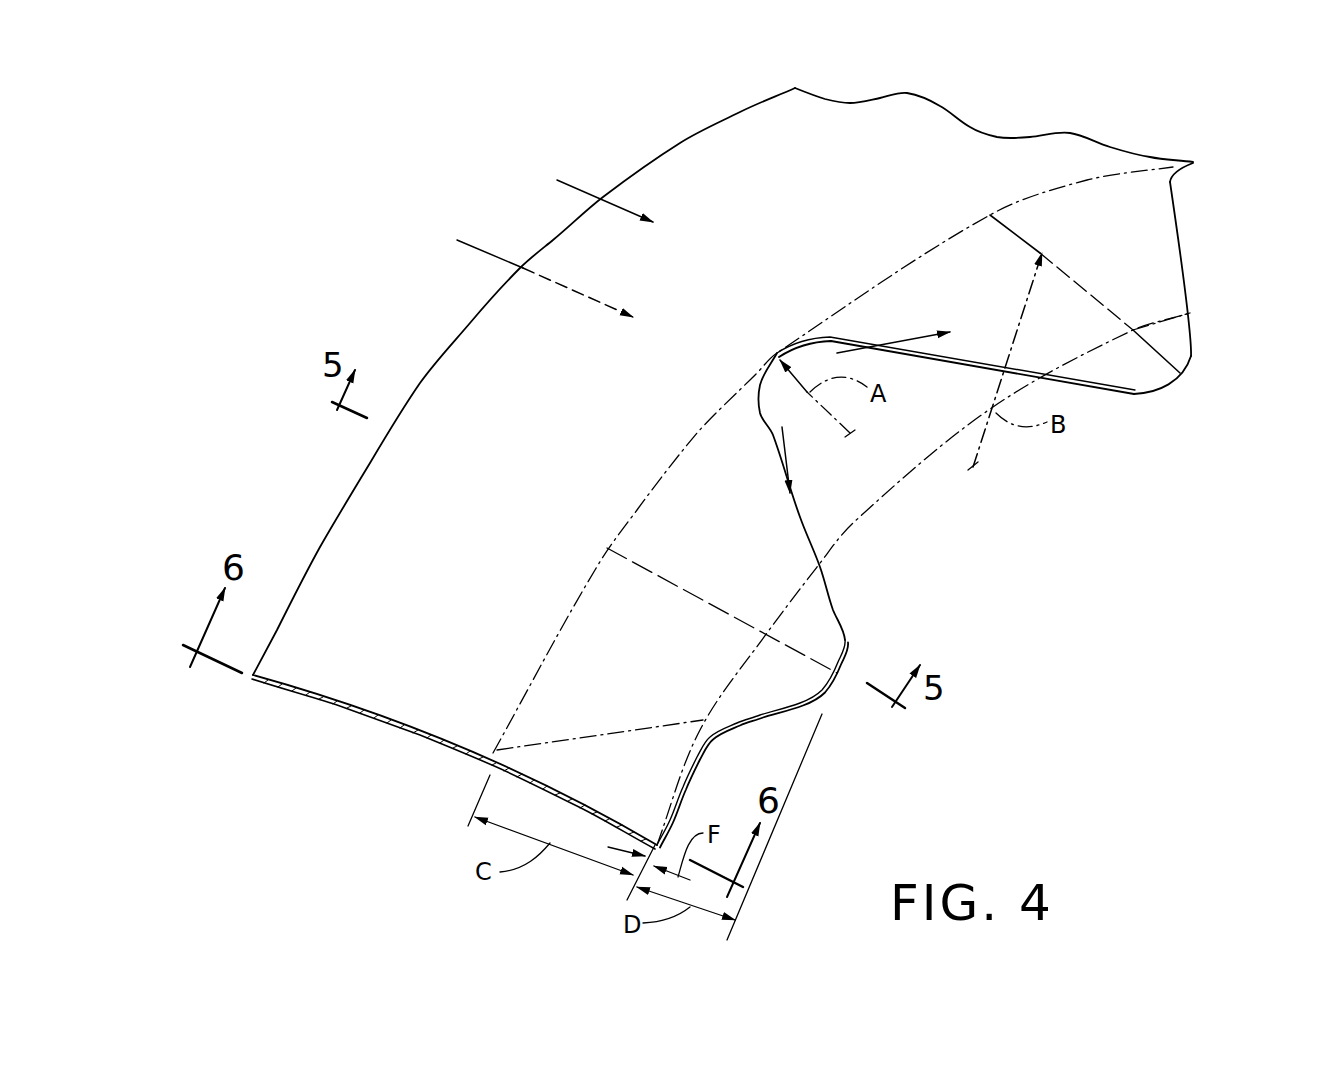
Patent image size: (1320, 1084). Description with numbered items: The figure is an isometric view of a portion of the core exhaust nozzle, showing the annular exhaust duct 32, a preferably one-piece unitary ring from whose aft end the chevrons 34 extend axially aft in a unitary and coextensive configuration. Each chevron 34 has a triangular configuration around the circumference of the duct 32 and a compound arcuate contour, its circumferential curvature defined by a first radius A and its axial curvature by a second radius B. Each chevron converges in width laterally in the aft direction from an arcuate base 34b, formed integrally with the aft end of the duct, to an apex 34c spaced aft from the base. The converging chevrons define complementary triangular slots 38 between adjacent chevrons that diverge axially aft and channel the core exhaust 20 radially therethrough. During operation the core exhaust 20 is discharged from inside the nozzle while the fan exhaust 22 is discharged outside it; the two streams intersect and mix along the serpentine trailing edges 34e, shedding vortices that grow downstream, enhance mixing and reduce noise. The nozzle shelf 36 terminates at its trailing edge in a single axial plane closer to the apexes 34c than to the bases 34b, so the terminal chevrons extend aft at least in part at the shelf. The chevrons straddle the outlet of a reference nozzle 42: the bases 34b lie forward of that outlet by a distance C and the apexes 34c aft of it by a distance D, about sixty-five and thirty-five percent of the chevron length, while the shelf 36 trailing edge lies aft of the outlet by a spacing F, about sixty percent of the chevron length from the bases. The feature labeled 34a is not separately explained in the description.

The core exhaust 20 is at (473, 242).
The fan exhaust 22 is at (577, 183).
The annular exhaust duct 32 is at (626, 418).
The chevrons 34 is at (1140, 378).
The flange S-bend portion 34a is at (833, 655).
The chevron base 34b is at (1088, 180).
The chevron apex 34c is at (1194, 358).
The trailing edges 34e is at (1087, 388).
The nozzle shelf 36 is at (620, 770).
The triangular slots 38 is at (960, 515).
The reference nozzle 42 is at (1167, 313).